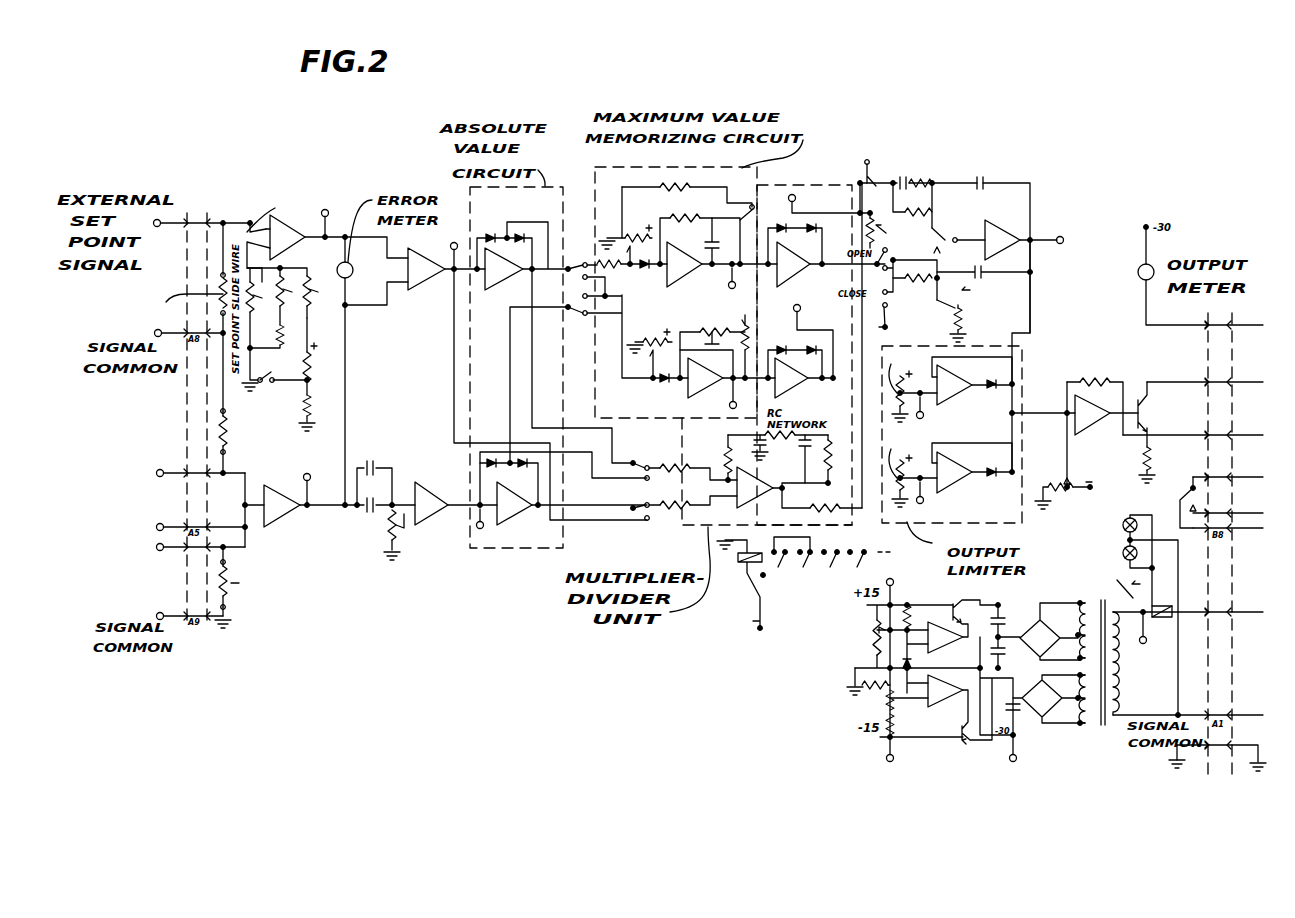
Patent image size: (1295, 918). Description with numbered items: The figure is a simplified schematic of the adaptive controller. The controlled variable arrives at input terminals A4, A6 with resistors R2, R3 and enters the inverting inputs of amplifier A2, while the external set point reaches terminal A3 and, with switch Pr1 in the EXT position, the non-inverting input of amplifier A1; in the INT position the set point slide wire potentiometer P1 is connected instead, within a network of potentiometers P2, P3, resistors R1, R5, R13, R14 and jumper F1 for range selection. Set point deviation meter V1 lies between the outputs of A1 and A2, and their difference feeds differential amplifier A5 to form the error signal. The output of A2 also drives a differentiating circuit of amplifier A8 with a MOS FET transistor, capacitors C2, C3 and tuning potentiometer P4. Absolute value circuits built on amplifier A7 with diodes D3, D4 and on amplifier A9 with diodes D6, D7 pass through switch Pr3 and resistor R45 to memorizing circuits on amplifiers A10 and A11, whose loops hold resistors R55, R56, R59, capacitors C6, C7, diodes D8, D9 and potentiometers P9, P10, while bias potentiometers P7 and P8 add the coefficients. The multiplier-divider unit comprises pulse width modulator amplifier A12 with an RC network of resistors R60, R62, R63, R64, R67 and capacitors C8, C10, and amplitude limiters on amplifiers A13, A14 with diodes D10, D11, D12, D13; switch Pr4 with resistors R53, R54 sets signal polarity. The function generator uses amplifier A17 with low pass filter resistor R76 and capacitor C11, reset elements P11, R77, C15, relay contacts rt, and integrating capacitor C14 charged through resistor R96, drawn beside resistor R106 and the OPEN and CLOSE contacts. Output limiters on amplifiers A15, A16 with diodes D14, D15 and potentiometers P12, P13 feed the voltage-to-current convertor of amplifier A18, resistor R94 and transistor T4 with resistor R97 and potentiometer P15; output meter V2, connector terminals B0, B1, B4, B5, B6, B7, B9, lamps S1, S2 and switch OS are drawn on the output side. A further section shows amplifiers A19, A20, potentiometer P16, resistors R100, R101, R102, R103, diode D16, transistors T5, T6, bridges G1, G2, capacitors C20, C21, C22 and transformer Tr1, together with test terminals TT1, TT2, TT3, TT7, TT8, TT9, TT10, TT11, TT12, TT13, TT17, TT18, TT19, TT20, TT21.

The amplifier A1 is at (285, 237).
The amplifier A2 is at (282, 506).
The input differential amplifier A5 is at (426, 269).
The amplifier A7 is at (504, 269).
The amplifier A8 is at (431, 503).
The amplifier A9 is at (514, 503).
The amplifier A10 is at (684, 264).
The amplifier A11 is at (705, 378).
The operational amplifier A12 is at (759, 487).
The amplifier A13 is at (793, 264).
The amplifier A14 is at (791, 378).
The output limiter amplifier A15 is at (954, 385).
The output limiter amplifier A16 is at (954, 472).
The amplifier A17 is at (1002, 240).
The amplifier A18 is at (1092, 415).
The power supply amplifier A19 is at (945, 637).
The power supply amplifier A20 is at (945, 691).
The input terminal A3 is at (202, 226).
The terminal A4 is at (201, 476).
The terminal A6 is at (201, 550).
The terminal B0 is at (1214, 750).
The terminal B1 is at (1214, 618).
The terminal B4 is at (1214, 332).
The terminal B5 is at (1214, 388).
The terminal B6 is at (1214, 442).
The terminal B7 is at (1214, 483).
The terminal B9 is at (1214, 517).
The capacitor C2 is at (355, 517).
The capacitor C3 is at (374, 468).
The capacitor C6 is at (709, 252).
The memory capacitor C7 is at (707, 355).
The capacitor C8 is at (769, 447).
The capacitor C10 is at (803, 459).
The capacitor C11 is at (901, 179).
The capacitor C14 is at (983, 275).
The capacitor C15 is at (985, 180).
The capacitor C20 is at (1012, 610).
The capacitor C21 is at (1017, 652).
The capacitor C22 is at (1025, 717).
The diode D3 is at (489, 229).
The diode D4 is at (522, 245).
The diode D6 is at (509, 482).
The diode D7 is at (523, 473).
The diode D8 is at (651, 277).
The diode D9 is at (662, 389).
The diode D10 is at (793, 234).
The diode D11 is at (773, 339).
The diode D12 is at (827, 226).
The diode D13 is at (812, 358).
The diode D14 is at (1001, 374).
The diode D15 is at (1002, 481).
The diode D16 is at (915, 662).
The resistor R1 is at (185, 306).
The resistor R2 is at (237, 431).
The resistor R3 is at (242, 584).
The resistor R5 is at (288, 345).
The resistor R13 is at (321, 351).
The resistor R14 is at (319, 412).
The resistor R45 is at (618, 273).
The resistor R53 is at (693, 459).
The resistor R54 is at (683, 511).
The resistor R55 is at (687, 188).
The resistor R56 is at (700, 227).
The resistor R59 is at (701, 342).
The resistor R60 is at (712, 466).
The resistor R62 is at (773, 430).
The resistor R63 is at (826, 502).
The resistor R64 is at (813, 512).
The resistor R67 is at (841, 459).
The resistor R76 is at (933, 177).
The resistor R77 is at (916, 222).
The resistor R94 is at (1088, 380).
The resistor R96 is at (967, 321).
The resistor R97 is at (1160, 465).
The resistor R100 is at (888, 695).
The resistor R101 is at (906, 724).
The resistor R102 is at (923, 616).
The resistor R103 is at (868, 681).
The resistor R106 is at (914, 289).
The set point slide wire potentiometer P1 is at (257, 303).
The potentiometer P2 is at (288, 300).
The potentiometer P3 is at (316, 300).
The potentiometer P4 is at (391, 525).
The potentiometer P7 is at (625, 230).
The potentiometer P8 is at (649, 350).
The potentiometer P9 is at (758, 210).
The potentiometer P10 is at (724, 344).
The potentiometer P11 is at (872, 230).
The potentiometer P12 is at (900, 386).
The potentiometer P13 is at (901, 470).
The potentiometer P15 is at (1063, 500).
The potentiometer P16 is at (870, 630).
The switch Pr1 is at (275, 213).
The switch Pr3 is at (572, 278).
The switch Pr4 is at (642, 478).
The jumper F1 is at (258, 377).
The set point deviation meter V1 is at (354, 371).
The output meter V2 is at (1138, 273).
The signal lamp S1 is at (1128, 541).
The signal lamp S2 is at (1141, 623).
The output switch OS is at (1162, 603).
The output transistor T4 is at (1152, 414).
The transistor T5 is at (975, 612).
The transistor T6 is at (977, 722).
The transformer Tr1 is at (1098, 656).
The rectifier bridge G1 is at (1039, 631).
The rectifier bridge G2 is at (1046, 699).
The relay contact rt is at (911, 201).
The external set point position EXT is at (249, 225).
The internal set point position INT is at (281, 262).
The open contact OPEN is at (881, 259).
The close contact CLOSE is at (883, 310).
The test terminal TT1 is at (321, 490).
The test terminal TT2 is at (339, 224).
The test terminal TT3 is at (533, 379).
The test terminal TT7 is at (495, 526).
The test terminal TT8 is at (720, 287).
The test terminal TT9 is at (718, 397).
The test terminal TT10 is at (830, 204).
The test terminal TT11 is at (816, 342).
The test terminal TT12 is at (939, 412).
The test terminal TT13 is at (939, 499).
The test terminal TT17 is at (1160, 633).
The test terminal TT18 is at (1081, 243).
The test terminal TT19 is at (911, 667).
The test terminal TT20 is at (914, 764).
The test terminal TT21 is at (1036, 763).